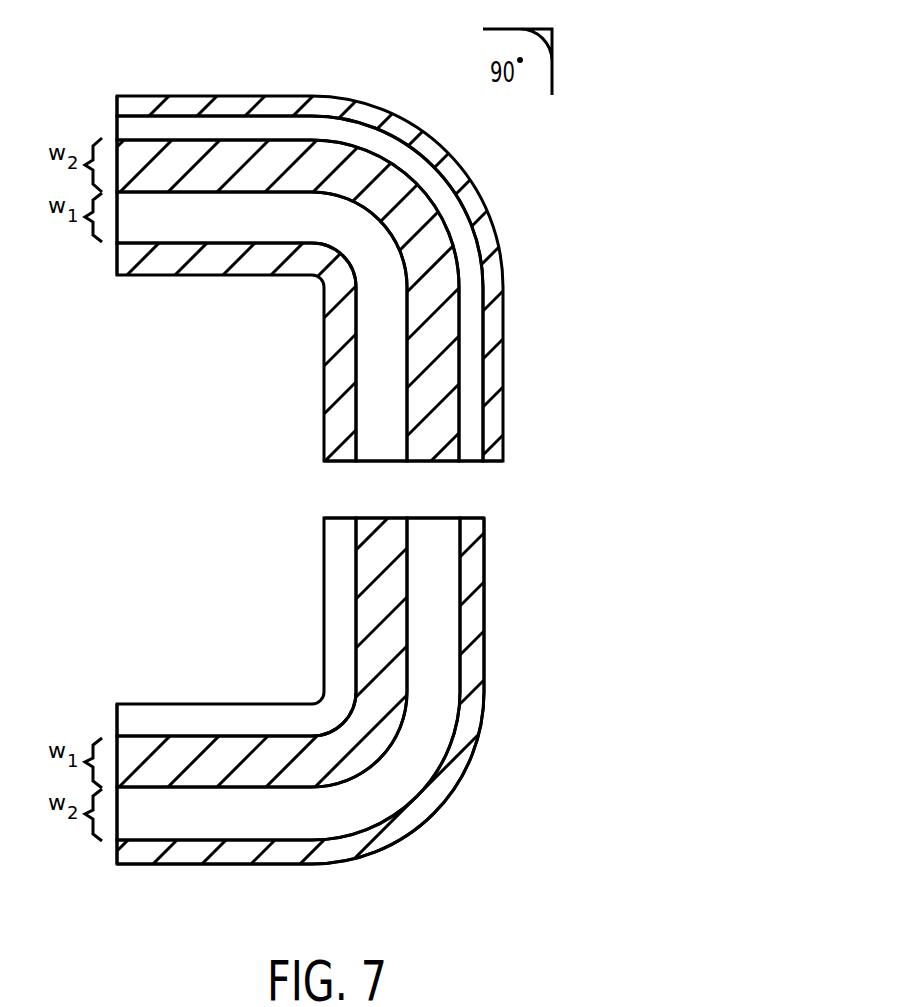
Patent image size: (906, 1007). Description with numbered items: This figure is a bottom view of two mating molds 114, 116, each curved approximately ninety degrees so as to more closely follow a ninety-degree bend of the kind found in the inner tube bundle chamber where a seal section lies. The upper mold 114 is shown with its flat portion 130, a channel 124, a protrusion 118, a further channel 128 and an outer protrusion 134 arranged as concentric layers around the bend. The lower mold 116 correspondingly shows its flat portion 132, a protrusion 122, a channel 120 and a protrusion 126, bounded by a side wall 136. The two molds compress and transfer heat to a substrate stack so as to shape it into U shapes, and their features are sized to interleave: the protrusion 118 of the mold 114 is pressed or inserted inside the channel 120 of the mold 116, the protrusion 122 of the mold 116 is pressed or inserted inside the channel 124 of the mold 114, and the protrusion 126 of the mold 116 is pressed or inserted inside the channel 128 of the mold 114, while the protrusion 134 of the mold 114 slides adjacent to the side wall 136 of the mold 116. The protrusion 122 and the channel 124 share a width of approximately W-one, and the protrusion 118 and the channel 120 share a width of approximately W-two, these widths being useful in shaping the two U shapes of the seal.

The mold 114 is at (453, 503).
The mold 116 is at (453, 503).
The protrusion 118 is at (438, 440).
The channel 120 is at (432, 583).
The protrusion 122 is at (388, 587).
The channel 124 is at (373, 395).
The protrusion 126 is at (472, 530).
The channel 128 is at (470, 390).
The flat portion 130 is at (343, 455).
The flat portion 132 is at (338, 550).
The protrusion 134 is at (493, 427).
The side wall 136 is at (487, 653).